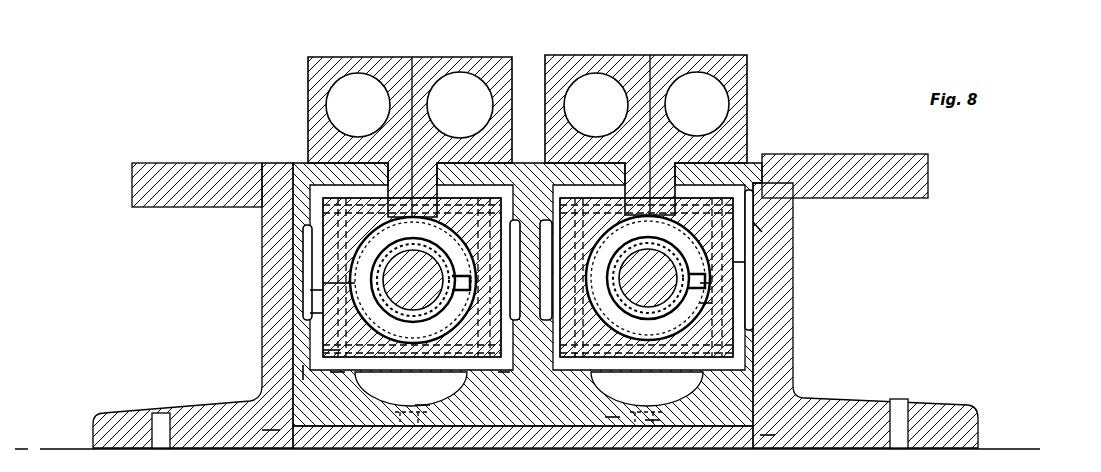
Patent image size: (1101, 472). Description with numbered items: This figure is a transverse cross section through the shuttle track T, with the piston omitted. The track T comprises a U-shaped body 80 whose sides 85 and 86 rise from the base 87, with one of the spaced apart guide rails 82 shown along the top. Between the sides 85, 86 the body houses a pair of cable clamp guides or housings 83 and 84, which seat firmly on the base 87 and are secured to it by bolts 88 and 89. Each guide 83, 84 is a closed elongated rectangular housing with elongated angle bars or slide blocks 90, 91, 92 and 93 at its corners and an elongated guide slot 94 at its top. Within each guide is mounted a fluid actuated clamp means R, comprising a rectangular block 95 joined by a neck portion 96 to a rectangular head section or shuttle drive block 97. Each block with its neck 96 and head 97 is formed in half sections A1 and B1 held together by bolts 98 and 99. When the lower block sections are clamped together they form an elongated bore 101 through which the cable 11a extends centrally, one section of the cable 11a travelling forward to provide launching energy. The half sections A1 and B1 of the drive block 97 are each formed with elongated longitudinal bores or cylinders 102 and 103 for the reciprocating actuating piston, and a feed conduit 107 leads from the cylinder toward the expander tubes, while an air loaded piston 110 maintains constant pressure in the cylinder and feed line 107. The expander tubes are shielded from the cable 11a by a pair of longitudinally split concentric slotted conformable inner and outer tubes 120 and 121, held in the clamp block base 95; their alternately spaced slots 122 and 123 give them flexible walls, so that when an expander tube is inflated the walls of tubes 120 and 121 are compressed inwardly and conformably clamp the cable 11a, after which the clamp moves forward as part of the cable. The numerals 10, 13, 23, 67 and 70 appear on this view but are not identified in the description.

The housing support 10 is at (300, 330).
The lower housing strip 13 is at (303, 375).
The housing corner 23 is at (760, 227).
The cable 11a is at (740, 263).
The base foot 67 is at (768, 435).
The shaft bearing 70 is at (530, 283).
The U-shaped body 80 is at (244, 327).
The guide rail 82 is at (855, 154).
The cable clamp guide 83 is at (280, 443).
The cable clamp guide 84 is at (612, 417).
The side 85 is at (262, 248).
The side 86 is at (795, 323).
The base 87 is at (162, 167).
The bolt 88 is at (422, 405).
The bolt 89 is at (652, 420).
The angle bar 90 is at (325, 196).
The angle bar 91 is at (333, 373).
The angle bar 92 is at (470, 158).
The angle bar 93 is at (502, 373).
The guide slot 94 is at (440, 160).
The rectangular block 95 is at (320, 296).
The neck portion 96 is at (392, 180).
The shuttle drive block 97 is at (412, 52).
The bolt 98 is at (318, 217).
The bolt 99 is at (335, 350).
The bore 101 is at (705, 283).
The cylinder 102 is at (477, 105).
The cylinder 103 is at (578, 105).
The feed conduit 107 is at (411, 398).
The air loaded piston 110 is at (530, 279).
The inner slotted tube 120 is at (705, 303).
The outer slotted tube 121 is at (647, 398).
The slot 122 is at (350, 284).
The slot 123 is at (320, 313).
The half section A1 is at (308, 73).
The half section B1 is at (516, 72).
The fluid actuated clamp means R is at (452, 280).
The shuttle track T is at (820, 355).